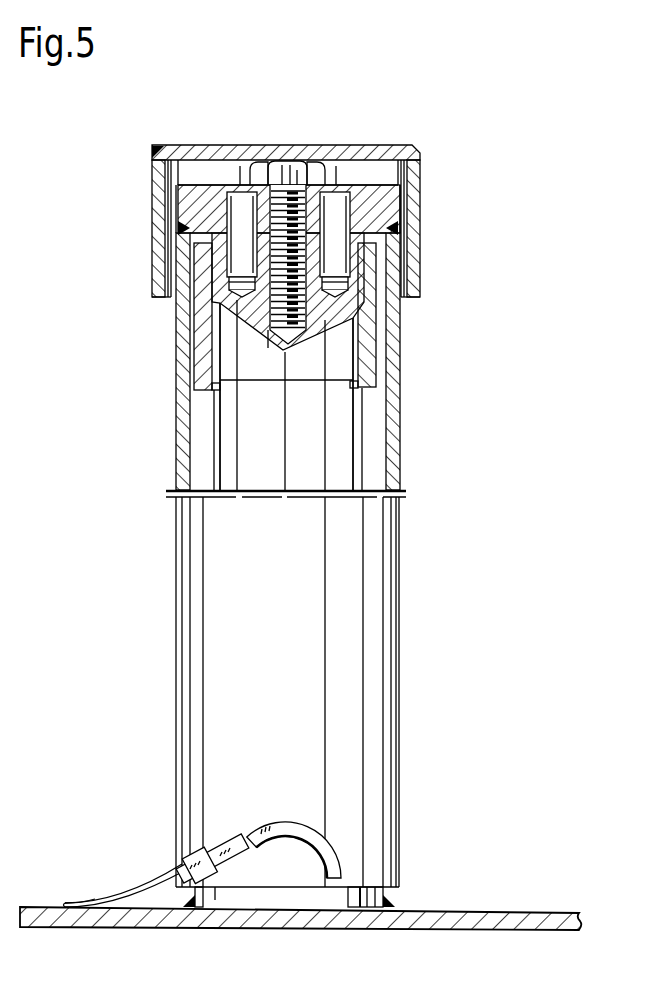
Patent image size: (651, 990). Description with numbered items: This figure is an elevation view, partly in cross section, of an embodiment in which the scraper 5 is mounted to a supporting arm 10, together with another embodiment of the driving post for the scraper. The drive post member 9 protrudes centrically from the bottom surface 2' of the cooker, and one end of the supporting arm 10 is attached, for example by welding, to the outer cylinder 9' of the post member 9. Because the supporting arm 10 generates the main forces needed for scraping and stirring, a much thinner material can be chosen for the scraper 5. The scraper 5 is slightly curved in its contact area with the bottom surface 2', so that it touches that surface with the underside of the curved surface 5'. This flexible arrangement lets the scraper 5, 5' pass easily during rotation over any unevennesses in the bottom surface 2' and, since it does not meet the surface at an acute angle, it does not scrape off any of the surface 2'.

The drive post member 9 is at (415, 536).
The outer cylinder 9' is at (161, 536).
The scraper 5 is at (156, 870).
The curved surface 5' is at (71, 886).
The supporting arm 10 is at (278, 822).
The bottom surface 2' is at (300, 937).